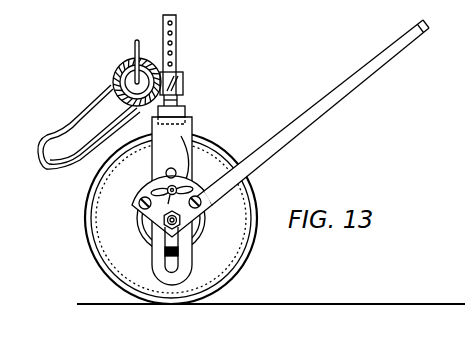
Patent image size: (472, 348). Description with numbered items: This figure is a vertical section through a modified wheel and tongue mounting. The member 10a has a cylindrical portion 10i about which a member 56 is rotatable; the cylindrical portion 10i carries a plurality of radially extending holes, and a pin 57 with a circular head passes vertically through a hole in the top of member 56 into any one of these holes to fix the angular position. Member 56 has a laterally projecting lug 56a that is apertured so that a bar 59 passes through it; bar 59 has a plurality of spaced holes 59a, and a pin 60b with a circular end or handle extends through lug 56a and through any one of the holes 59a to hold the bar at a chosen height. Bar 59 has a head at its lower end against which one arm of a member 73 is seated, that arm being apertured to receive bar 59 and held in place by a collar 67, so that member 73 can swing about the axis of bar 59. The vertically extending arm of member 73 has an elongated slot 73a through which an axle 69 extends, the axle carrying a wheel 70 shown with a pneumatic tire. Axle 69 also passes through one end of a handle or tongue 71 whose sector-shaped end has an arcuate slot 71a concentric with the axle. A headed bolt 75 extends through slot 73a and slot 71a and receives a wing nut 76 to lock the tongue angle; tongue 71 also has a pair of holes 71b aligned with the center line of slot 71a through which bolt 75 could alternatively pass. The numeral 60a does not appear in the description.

The member 10a is at (70, 126).
The cylindrical portion 10i is at (120, 102).
The member 56 is at (160, 99).
The laterally projecting lug 56a is at (183, 97).
The pin 57 is at (117, 73).
The bar 59 is at (173, 63).
The spaced holes 59a is at (173, 52).
The slide block 60a is at (183, 82).
The pin 60b is at (163, 65).
The collar 67 is at (185, 110).
The axle 69 is at (163, 228).
The wheel 70 is at (103, 225).
The handle or tongue 71 is at (371, 59).
The arcuate slot 71a is at (186, 191).
The holes 71b is at (139, 203).
The member 73 is at (155, 160).
The elongated slot 73a is at (165, 267).
The headed bolt 75 is at (200, 219).
The wing nut 76 is at (173, 149).